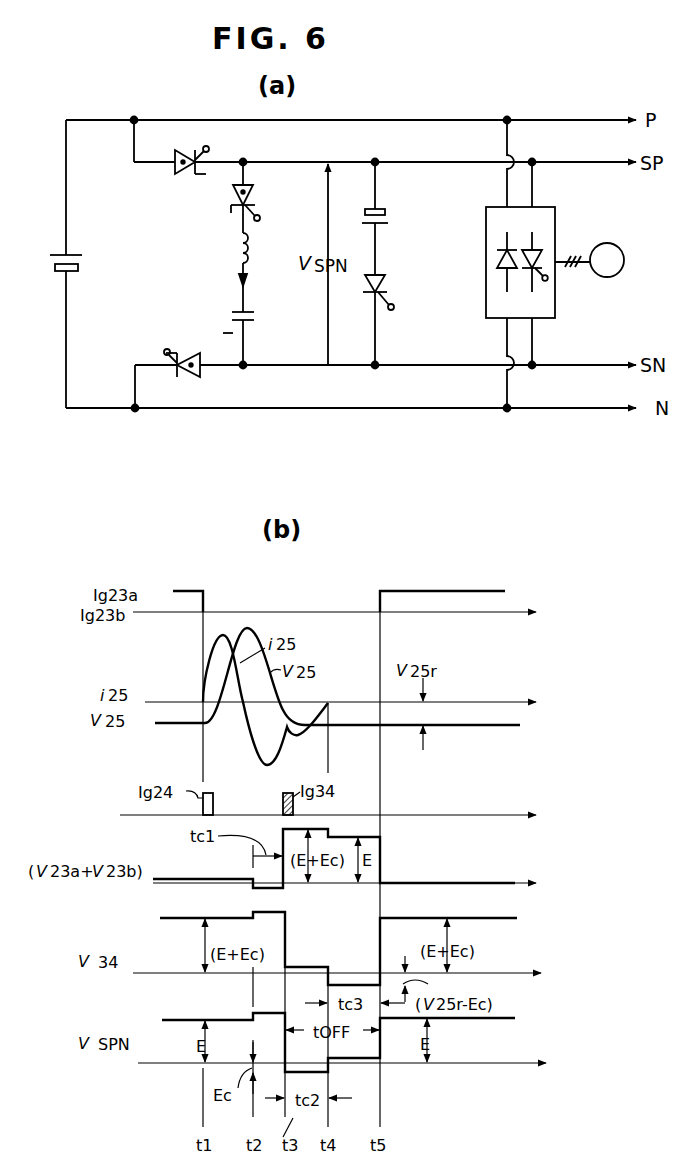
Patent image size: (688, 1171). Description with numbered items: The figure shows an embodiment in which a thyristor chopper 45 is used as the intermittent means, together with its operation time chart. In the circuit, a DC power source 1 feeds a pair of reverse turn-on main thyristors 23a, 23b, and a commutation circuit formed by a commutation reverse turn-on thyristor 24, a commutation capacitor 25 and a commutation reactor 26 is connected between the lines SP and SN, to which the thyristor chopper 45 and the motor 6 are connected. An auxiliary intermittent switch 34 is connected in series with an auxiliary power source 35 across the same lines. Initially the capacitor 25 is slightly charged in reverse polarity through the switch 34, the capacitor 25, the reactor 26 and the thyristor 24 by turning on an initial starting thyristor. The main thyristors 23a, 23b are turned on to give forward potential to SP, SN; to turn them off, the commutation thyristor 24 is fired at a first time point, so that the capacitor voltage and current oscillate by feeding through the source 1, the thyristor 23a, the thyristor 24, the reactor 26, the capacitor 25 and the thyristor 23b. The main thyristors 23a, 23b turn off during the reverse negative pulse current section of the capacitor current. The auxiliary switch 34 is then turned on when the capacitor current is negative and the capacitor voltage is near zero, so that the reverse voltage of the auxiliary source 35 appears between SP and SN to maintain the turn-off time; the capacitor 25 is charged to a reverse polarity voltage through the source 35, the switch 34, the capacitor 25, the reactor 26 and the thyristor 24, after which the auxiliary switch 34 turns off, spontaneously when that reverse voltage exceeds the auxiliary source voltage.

The DC power source 1 is at (56, 270).
The reverse turn-on thyristor 23a is at (146, 164).
The reverse turn-on thyristor 23b is at (168, 348).
The commutation reverse turn-on thyristor 24 is at (254, 201).
The commutation capacitor 25 is at (254, 322).
The commutation reactor 26 is at (239, 255).
The auxiliary intermittent switch 34 is at (393, 285).
The auxiliary power source 35 is at (387, 222).
The thyristor chopper 45 is at (540, 228).
The motor 6 is at (607, 277).